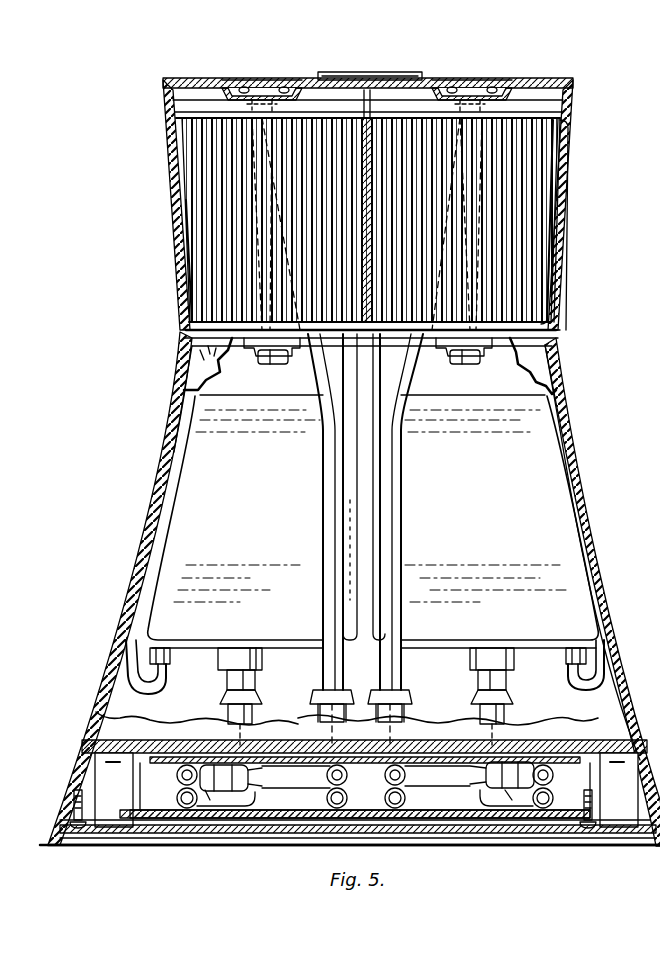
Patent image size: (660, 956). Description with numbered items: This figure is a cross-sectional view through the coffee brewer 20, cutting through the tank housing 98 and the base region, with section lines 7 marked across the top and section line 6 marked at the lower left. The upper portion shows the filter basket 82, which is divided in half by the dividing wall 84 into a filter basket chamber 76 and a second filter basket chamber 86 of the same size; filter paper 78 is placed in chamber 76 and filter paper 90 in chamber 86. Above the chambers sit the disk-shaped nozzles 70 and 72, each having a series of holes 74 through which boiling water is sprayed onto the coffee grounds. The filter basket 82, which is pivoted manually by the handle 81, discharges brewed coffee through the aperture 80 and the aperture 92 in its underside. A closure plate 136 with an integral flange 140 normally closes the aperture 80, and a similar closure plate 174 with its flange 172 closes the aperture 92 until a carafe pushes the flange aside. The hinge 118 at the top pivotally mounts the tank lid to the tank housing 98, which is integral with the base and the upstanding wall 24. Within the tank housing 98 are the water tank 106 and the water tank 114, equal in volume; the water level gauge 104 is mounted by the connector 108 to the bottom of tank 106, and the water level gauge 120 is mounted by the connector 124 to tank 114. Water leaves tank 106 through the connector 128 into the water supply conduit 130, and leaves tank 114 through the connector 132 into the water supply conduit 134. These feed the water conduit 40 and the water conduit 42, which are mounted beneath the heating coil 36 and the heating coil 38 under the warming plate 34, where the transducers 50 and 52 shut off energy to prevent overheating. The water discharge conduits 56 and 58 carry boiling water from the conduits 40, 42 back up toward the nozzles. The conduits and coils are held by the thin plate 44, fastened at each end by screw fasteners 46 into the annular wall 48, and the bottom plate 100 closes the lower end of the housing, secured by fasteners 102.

The section line 6- 6 is at (82, 764).
The section line 7- 7 is at (158, 86).
The coffee brewer 20 is at (162, 148).
The upstanding wall 24 is at (118, 670).
The warming plate 34 is at (294, 796).
The heating coil 36 is at (408, 720).
The heating coil 38 is at (316, 722).
The water conduit 40 is at (560, 816).
The water conduit 42 is at (202, 800).
The thin plate 44 is at (474, 814).
The screw fasteners 46 is at (604, 816).
The annular wall 48 is at (128, 810).
The transducer 50 is at (518, 722).
The transducer 52 is at (198, 724).
The water discharge conduit 56 is at (402, 508).
The water discharge conduit 58 is at (326, 510).
The nozzle 70 is at (498, 86).
The nozzle 72 is at (296, 84).
The holes 74 is at (244, 84).
The filter basket chamber 76 is at (548, 170).
The filter paper 78 is at (540, 250).
The aperture 80 is at (480, 364).
The handle 81 is at (566, 284).
The filter basket 82 is at (560, 310).
The dividing wall 84 is at (376, 80).
The filter basket chamber 86 is at (195, 210).
The filter paper 90 is at (180, 258).
The aperture 92 is at (218, 340).
The tank housing 98 is at (562, 426).
The bottom plate 100 is at (518, 834).
The fasteners 102 is at (86, 834).
The water level gauge 104 is at (562, 472).
The water tank 106 is at (546, 510).
The connector 108 is at (570, 644).
The water tank 114 is at (206, 454).
The hinge 118 is at (380, 74).
The water level gauge 120 is at (190, 412).
The connector 124 is at (160, 646).
The connector 128 is at (488, 646).
The water supply conduit 130 is at (510, 712).
The connector 132 is at (238, 648).
The water supply conduit 134 is at (218, 712).
The closure plate 136 is at (496, 348).
The flange 140 is at (472, 360).
The flange 172 is at (280, 360).
The closure plate 174 is at (266, 360).